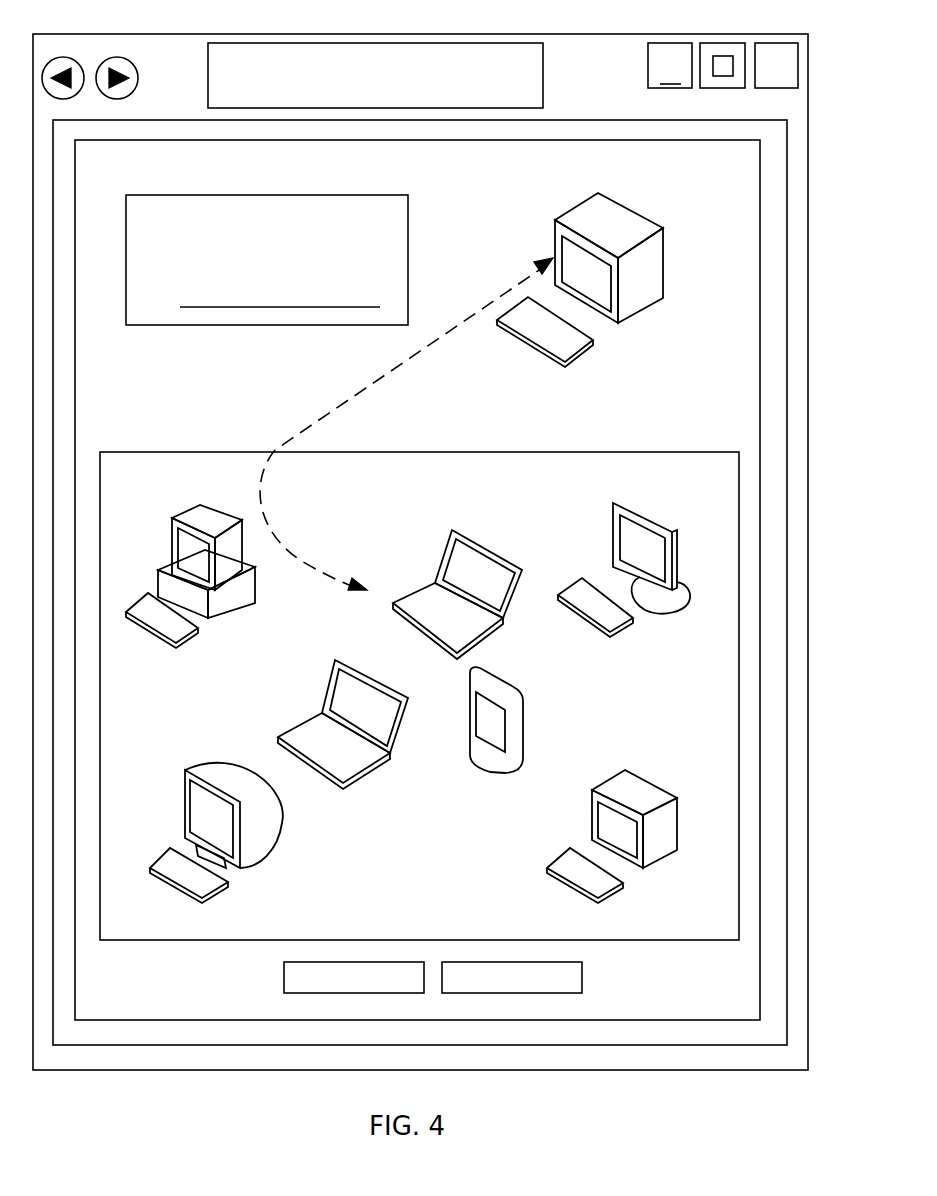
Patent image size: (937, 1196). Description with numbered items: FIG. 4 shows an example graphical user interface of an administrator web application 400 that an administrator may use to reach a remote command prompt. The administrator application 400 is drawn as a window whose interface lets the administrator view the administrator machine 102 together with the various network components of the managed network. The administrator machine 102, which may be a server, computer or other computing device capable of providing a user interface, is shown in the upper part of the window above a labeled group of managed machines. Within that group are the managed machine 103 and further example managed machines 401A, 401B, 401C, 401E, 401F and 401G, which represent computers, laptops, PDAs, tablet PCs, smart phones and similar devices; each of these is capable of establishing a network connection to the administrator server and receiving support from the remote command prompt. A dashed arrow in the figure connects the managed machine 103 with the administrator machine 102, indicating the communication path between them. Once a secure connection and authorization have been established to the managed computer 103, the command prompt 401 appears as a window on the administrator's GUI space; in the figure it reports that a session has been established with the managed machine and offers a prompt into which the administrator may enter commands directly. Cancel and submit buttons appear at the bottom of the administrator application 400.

The administrator application 400 is at (510, 88).
The command prompt 401 is at (408, 230).
The administrator machine 102 is at (648, 220).
The managed machine 103 is at (448, 594).
The managed machine 401A is at (195, 578).
The managed machine 401B is at (219, 835).
The managed machine 401C is at (343, 737).
The managed machine 401E is at (529, 720).
The managed machine 401F is at (624, 580).
The managed machine 401G is at (620, 839).